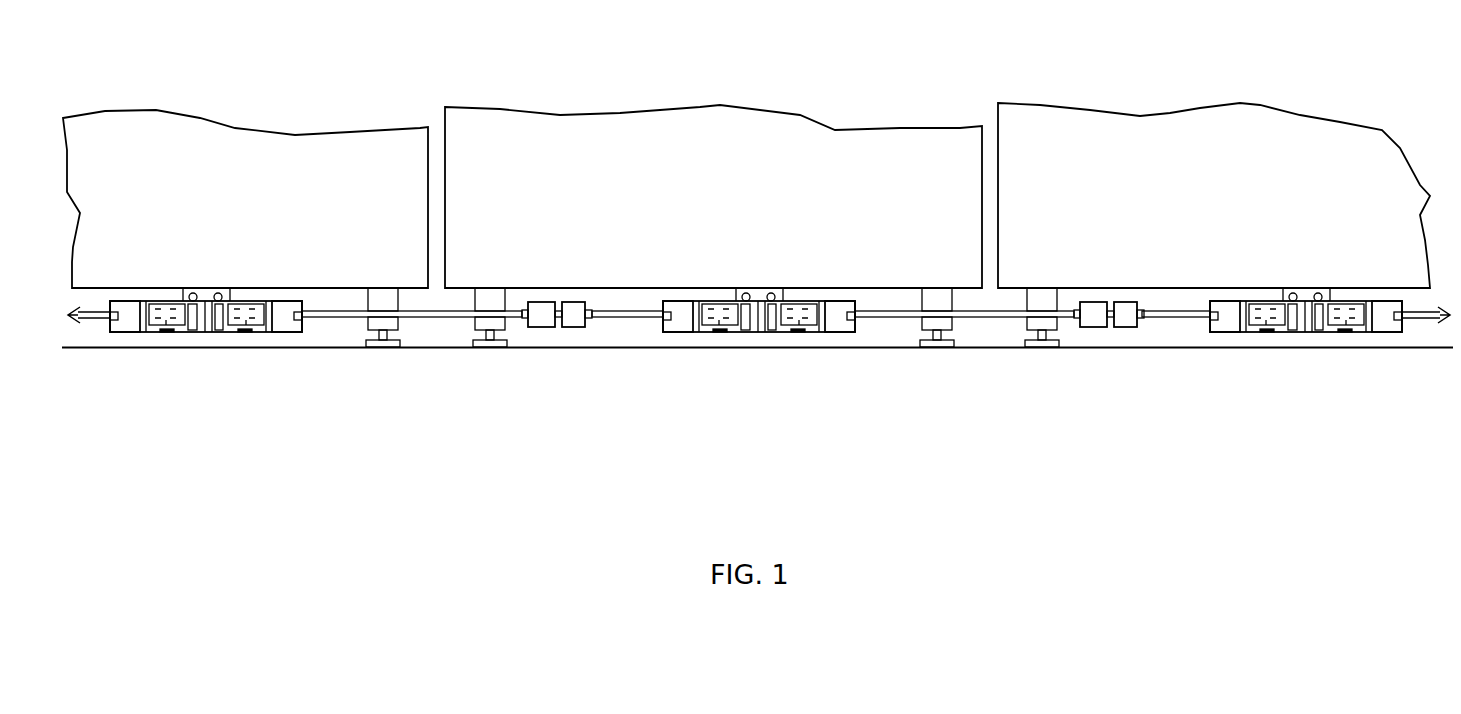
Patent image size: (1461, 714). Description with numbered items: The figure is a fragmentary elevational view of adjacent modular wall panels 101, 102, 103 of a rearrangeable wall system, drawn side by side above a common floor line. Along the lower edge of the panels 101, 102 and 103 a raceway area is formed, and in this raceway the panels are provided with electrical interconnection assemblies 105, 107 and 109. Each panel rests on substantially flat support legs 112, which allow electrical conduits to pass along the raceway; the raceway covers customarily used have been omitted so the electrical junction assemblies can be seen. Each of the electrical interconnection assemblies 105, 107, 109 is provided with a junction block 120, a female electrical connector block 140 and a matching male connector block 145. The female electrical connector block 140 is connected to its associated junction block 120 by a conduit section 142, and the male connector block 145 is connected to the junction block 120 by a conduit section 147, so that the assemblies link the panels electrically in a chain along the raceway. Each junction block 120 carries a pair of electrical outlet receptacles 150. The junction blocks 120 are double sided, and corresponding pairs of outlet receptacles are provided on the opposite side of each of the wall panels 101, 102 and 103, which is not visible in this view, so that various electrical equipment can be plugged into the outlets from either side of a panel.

The modular wall panel 101 is at (237, 127).
The modular wall panel 102 is at (717, 112).
The modular wall panel 103 is at (1190, 113).
The electrical interconnection assembly 105 is at (124, 333).
The electrical interconnection assembly 107 is at (756, 365).
The electrical interconnection assembly 109 is at (1293, 365).
The support leg 112 is at (380, 341).
The junction block 120 is at (200, 289).
The female electrical connector block 140 is at (573, 328).
The conduit section 142 is at (624, 309).
The male connector block 145 is at (544, 328).
The conduit section 147 is at (328, 319).
The electrical outlet receptacle 150 is at (234, 331).